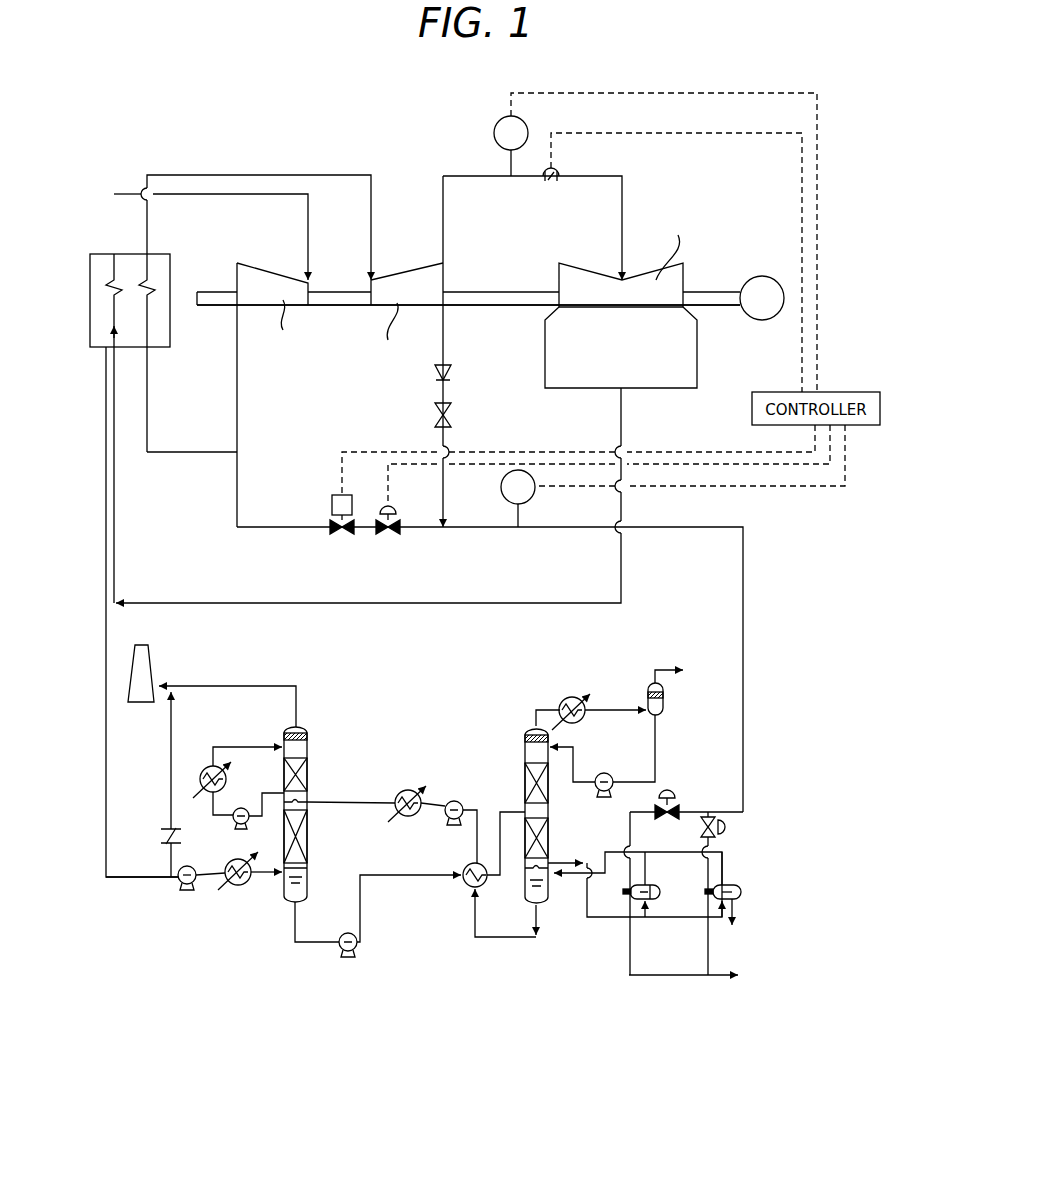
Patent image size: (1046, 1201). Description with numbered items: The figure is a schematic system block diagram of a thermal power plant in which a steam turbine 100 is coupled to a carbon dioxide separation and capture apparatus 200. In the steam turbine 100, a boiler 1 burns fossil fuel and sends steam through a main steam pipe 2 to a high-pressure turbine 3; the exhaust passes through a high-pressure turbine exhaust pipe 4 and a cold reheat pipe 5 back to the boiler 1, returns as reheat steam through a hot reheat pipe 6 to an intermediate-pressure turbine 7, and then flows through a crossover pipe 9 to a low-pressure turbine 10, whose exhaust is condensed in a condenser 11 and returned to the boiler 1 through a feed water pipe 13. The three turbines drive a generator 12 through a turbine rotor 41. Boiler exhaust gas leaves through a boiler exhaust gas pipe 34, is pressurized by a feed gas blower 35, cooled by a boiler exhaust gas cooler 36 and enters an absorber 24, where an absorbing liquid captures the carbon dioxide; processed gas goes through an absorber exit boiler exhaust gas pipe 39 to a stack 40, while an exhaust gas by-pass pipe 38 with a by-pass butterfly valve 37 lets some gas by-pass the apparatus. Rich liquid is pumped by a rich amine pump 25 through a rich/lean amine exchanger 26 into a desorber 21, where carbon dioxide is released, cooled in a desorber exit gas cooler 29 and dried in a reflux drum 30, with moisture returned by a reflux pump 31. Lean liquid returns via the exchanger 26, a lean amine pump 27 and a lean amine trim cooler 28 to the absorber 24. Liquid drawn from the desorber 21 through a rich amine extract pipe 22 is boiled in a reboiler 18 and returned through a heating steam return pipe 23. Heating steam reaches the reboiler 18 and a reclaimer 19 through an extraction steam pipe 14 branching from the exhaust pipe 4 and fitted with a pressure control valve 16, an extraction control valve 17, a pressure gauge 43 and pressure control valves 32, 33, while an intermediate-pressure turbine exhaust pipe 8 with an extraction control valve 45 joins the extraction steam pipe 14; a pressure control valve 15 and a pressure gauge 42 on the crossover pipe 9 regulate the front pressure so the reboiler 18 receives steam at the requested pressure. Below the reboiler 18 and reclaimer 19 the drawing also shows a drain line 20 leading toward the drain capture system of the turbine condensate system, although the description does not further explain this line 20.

The boiler 1 is at (102, 252).
The main steam pipe 2 is at (209, 196).
The high-pressure turbine 3 is at (279, 272).
The high-pressure turbine exhaust pipe 4 is at (238, 406).
The cold reheat pipe 5 is at (193, 452).
The hot reheat pipe 6 is at (207, 175).
The intermediate-pressure turbine 7 is at (408, 270).
The intermediate-pressure turbine exhaust pipe 8 is at (445, 328).
The crossover pipe 9 is at (476, 178).
The low-pressure turbine 10 is at (685, 272).
The condenser 11 is at (699, 358).
The generator 12 is at (766, 277).
The feed water pipe 13 is at (623, 568).
The extraction steam pipe 14 is at (280, 526).
The pressure control valve 15 is at (551, 184).
The pressure control valve 16 is at (389, 536).
The extraction control valve 17 is at (342, 536).
The reboiler 18 is at (656, 885).
The reclaimer 19 is at (738, 885).
The drain pipe 20 is at (668, 977).
The desorber 21 is at (524, 748).
The rich amine extract pipe 22 is at (598, 919).
The heating steam return pipe 23 is at (621, 852).
The absorber 24 is at (309, 748).
The rich amine pump 25 is at (358, 950).
The rich/lean amine exchanger 26 is at (466, 885).
The lean amine pump 27 is at (463, 803).
The lean amine trim cooler 28 is at (410, 790).
The desorber exit gas cooler 29 is at (565, 697).
The reflux drum 30 is at (666, 700).
The reflux pump 31 is at (606, 773).
The pressure control valve 32 is at (676, 795).
The pressure control valve 33 is at (729, 827).
The boiler exhaust gas pipe 34 is at (133, 881).
The feed gas blower 35 is at (188, 890).
The boiler exhaust gas cooler 36 is at (238, 886).
The by-pass butterfly valve 37 is at (163, 838).
The exhaust gas by-pass pipe 38 is at (170, 752).
The absorber exit boiler exhaust gas pipe 39 is at (243, 686).
The stack 40 is at (153, 660).
The turbine rotor 41 is at (502, 292).
The pressure gauge 42 is at (498, 118).
The pressure gauge 43 is at (503, 493).
The extraction control valve 45 is at (451, 413).
The steam turbine 100 is at (365, 110).
The carbon dioxide separation and capture apparatus 200 is at (447, 1035).